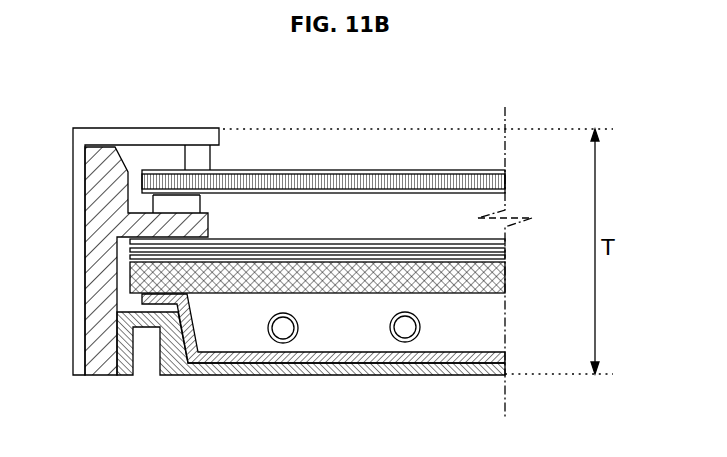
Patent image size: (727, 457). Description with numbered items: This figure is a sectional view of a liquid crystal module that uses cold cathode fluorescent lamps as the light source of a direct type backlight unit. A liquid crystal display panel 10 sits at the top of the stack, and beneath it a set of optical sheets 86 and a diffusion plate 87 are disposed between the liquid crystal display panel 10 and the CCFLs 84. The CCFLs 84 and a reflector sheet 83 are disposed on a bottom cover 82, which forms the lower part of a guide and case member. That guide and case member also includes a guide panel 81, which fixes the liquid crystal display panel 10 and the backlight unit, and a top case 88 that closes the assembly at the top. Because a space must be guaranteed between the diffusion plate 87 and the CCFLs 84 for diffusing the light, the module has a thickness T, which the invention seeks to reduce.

The liquid crystal display panel 10 is at (500, 181).
The guide panel 81 is at (97, 148).
The bottom cover 82 is at (448, 372).
The reflector sheet 83 is at (365, 362).
The CCFLs 84 is at (283, 343).
The optical sheets 86 is at (507, 248).
The diffusion plate 87 is at (505, 283).
The top case 88 is at (177, 137).